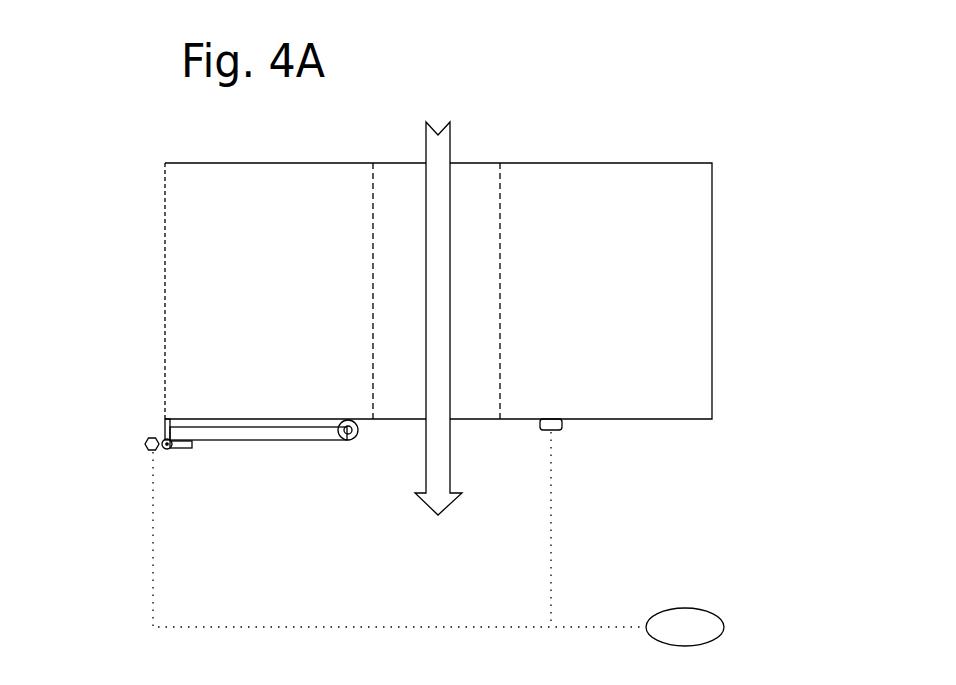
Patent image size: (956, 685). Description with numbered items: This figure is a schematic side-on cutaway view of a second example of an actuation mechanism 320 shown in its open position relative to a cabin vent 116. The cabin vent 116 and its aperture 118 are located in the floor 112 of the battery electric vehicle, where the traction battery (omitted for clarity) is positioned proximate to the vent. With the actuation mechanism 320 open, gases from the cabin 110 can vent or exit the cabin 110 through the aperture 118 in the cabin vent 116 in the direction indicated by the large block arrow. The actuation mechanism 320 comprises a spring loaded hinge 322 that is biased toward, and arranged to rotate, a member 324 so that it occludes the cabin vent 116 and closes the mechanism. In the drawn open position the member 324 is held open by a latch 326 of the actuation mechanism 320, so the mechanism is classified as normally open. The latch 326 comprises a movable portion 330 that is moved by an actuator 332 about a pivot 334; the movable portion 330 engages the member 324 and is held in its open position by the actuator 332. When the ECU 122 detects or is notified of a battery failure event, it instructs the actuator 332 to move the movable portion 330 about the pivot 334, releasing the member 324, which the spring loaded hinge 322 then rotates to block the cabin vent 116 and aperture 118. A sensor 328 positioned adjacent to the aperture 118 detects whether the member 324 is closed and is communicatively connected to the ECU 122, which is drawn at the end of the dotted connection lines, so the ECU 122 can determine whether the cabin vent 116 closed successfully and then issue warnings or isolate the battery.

The cabin 110 is at (457, 113).
The floor 112 is at (282, 285).
The cabin vent 116 is at (470, 198).
The aperture 118 is at (478, 430).
The ECU 122 is at (684, 607).
The actuation mechanism 320 is at (194, 443).
The spring loaded hinge 322 is at (348, 441).
The member 324 is at (284, 441).
The latch 326 is at (149, 419).
The sensor 328 is at (561, 431).
The movable portion 330 is at (192, 447).
The actuator 332 is at (150, 452).
The pivot 334 is at (168, 450).